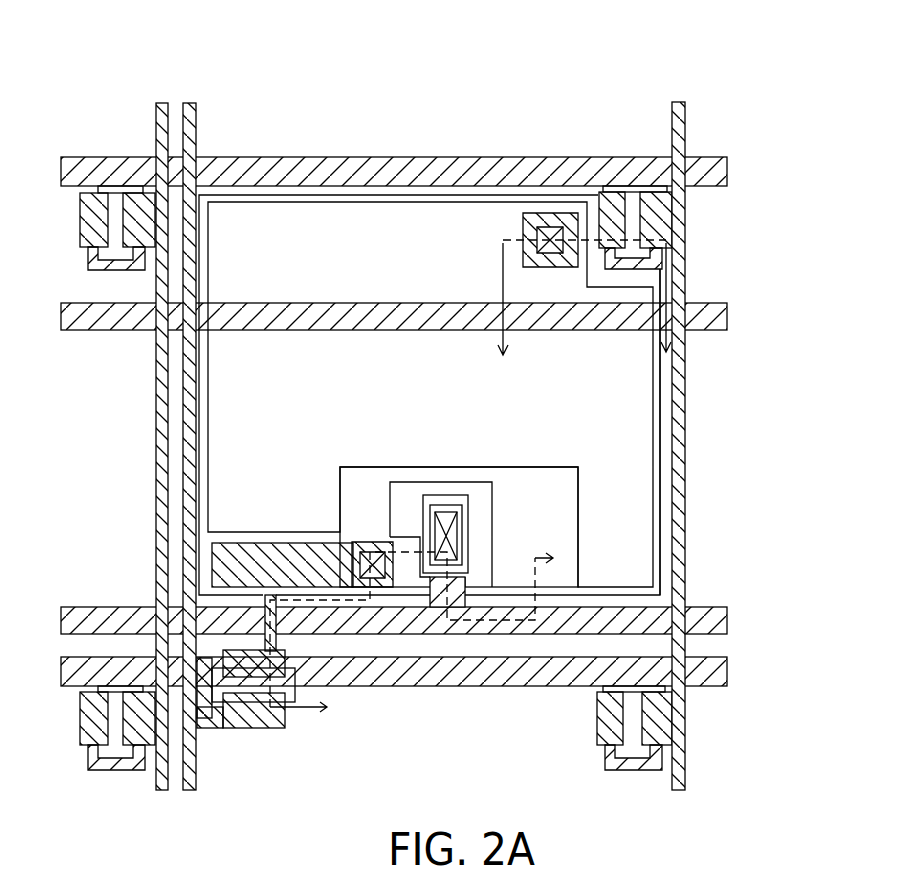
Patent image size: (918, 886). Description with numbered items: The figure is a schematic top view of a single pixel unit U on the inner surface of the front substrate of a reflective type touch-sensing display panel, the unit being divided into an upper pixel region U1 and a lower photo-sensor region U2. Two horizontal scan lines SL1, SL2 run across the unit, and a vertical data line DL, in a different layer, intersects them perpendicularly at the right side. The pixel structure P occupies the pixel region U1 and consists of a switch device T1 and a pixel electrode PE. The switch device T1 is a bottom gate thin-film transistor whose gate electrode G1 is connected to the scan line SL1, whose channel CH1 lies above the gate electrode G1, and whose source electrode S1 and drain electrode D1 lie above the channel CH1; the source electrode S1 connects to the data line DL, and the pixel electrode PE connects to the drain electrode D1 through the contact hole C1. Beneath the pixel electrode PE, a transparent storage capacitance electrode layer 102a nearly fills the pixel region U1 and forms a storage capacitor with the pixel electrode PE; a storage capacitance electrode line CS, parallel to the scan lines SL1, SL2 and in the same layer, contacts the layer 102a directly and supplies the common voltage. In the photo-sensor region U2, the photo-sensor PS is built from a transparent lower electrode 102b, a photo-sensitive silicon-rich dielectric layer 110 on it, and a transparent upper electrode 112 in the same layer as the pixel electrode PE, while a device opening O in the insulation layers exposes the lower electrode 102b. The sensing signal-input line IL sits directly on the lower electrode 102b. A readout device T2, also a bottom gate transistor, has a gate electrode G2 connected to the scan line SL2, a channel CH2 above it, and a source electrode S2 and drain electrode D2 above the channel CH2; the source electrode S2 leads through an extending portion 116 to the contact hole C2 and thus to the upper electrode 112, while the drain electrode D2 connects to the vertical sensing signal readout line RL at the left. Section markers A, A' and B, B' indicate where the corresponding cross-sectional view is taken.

The sensing signal readout line RL is at (190, 108).
The data line DL is at (680, 107).
The scan line SL1 is at (727, 168).
The scan line SL2 is at (726, 667).
The storage capacitance electrode line CS is at (716, 317).
The sensing signal-input line IL is at (713, 624).
The pixel structure P is at (578, 47).
The pixel electrode PE is at (403, 200).
The switch device T1 is at (580, 158).
The drain electrode D1 is at (603, 192).
The gate electrode G1 is at (633, 215).
The channel CH1 is at (630, 200).
The source electrode S1 is at (656, 207).
The readout device T2 is at (284, 743).
The drain electrode D2 is at (248, 692).
The gate electrode G2 is at (262, 680).
The channel CH2 is at (328, 731).
The source electrode S2 is at (262, 672).
The contact hole C1 is at (536, 238).
The contact hole C2 is at (362, 545).
The device opening O is at (447, 512).
The extending portion 116 is at (254, 555).
The upper electrode 112 is at (413, 578).
The photo-sensitive silicon-rich dielectric layer 110 is at (440, 580).
The transparent storage capacitance electrode layer 102a is at (660, 443).
The transparent lower electrode 102b is at (475, 557).
The photo-sensor PS is at (459, 592).
The pixel unit U is at (814, 303).
The pixel region U1 is at (772, 160).
The photo-sensor region U2 is at (772, 475).
The section line A-A' end A is at (588, 311).
The section line A-A' end A' is at (505, 314).
The section line B-B' end B is at (421, 626).
The section line B-B' end B' is at (310, 711).